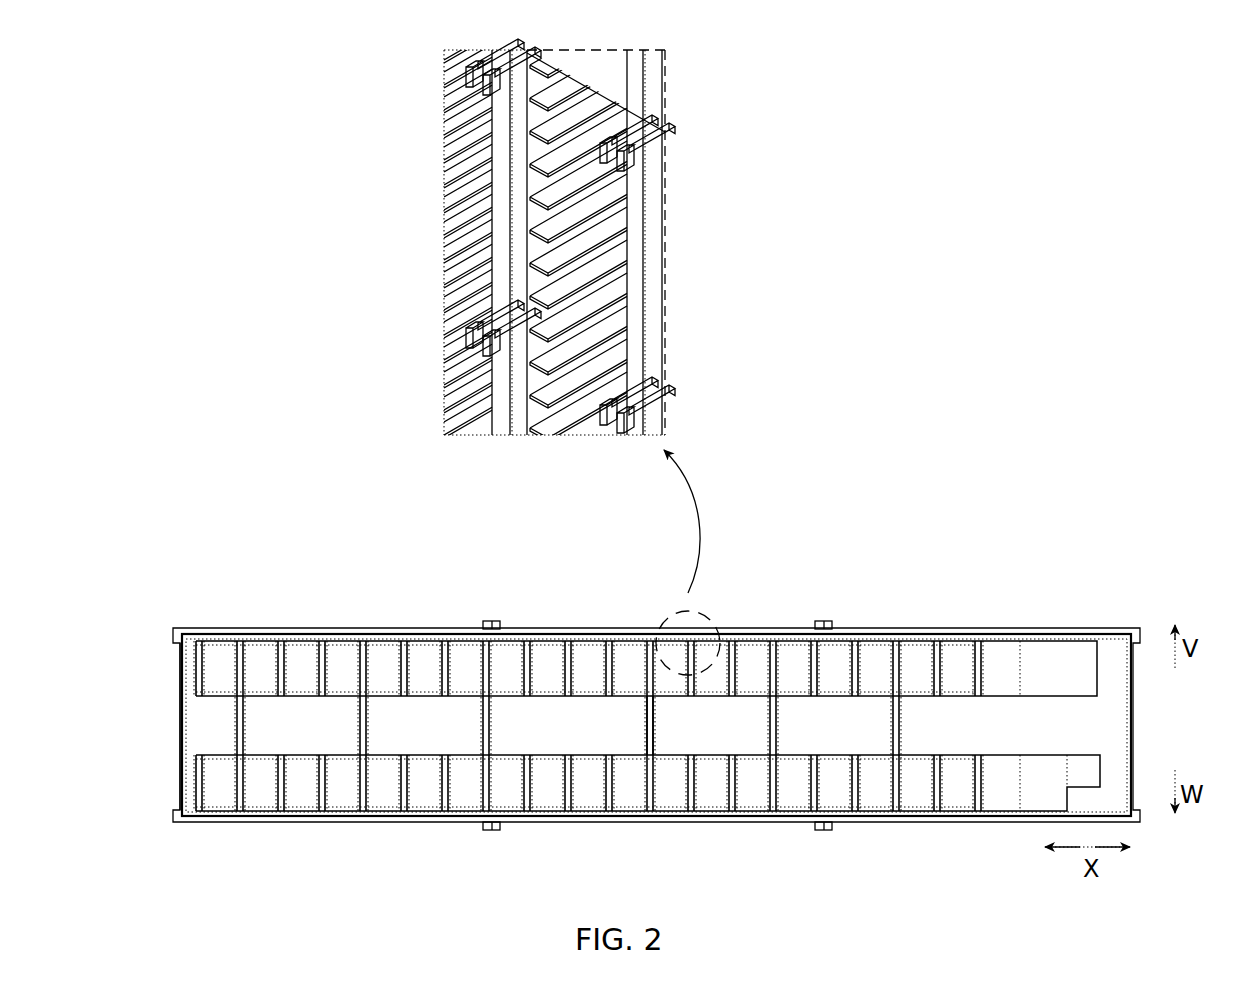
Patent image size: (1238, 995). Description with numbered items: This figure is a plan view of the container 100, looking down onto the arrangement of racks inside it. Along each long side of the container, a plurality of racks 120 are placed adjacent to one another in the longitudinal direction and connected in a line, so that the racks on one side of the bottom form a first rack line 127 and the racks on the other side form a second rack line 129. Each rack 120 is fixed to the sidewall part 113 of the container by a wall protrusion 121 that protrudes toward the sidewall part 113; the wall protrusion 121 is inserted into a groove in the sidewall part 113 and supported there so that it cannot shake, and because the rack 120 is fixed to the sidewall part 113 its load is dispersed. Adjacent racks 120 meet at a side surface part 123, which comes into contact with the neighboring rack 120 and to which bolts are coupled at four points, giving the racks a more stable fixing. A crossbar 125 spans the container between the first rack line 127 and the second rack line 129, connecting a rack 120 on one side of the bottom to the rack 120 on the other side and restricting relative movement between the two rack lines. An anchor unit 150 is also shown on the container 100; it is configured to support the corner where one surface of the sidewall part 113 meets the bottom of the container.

The container 100 is at (624, 723).
The sidewall part 113 is at (425, 630).
The rack 120 is at (590, 272).
The wall protrusion 121 is at (655, 150).
The side surface part 123 is at (717, 652).
The crossbar 125 is at (651, 744).
The first rack line 127 is at (182, 664).
The second rack line 129 is at (182, 785).
The anchor unit 150 is at (489, 835).